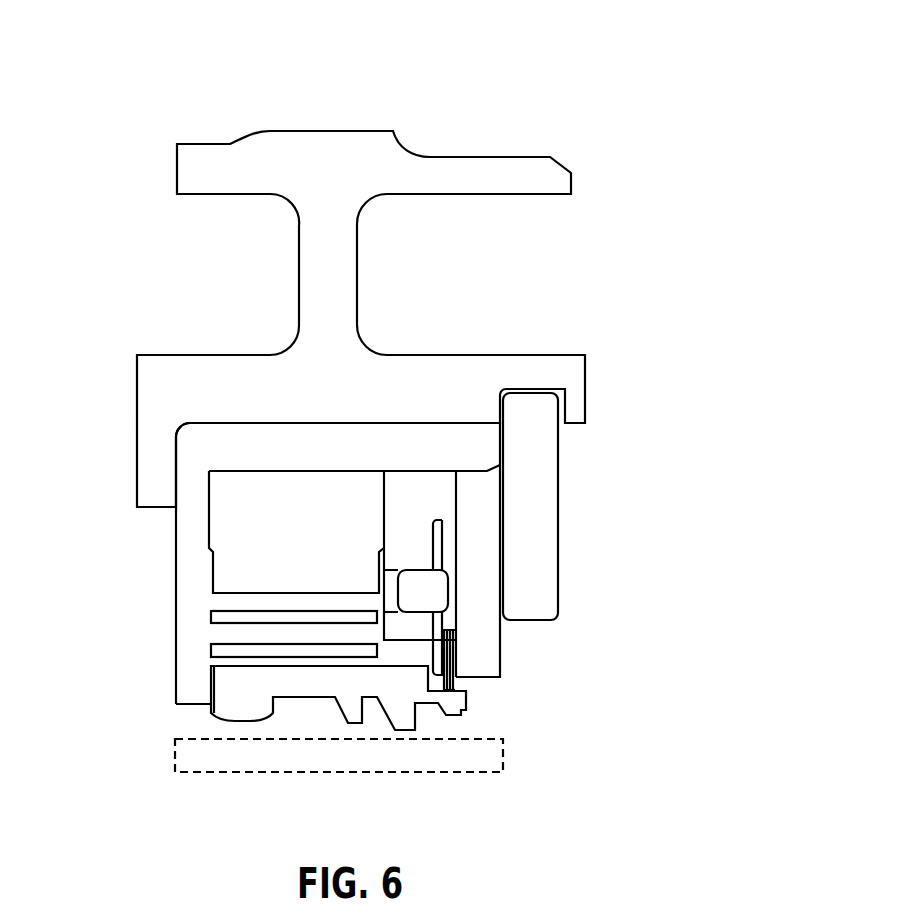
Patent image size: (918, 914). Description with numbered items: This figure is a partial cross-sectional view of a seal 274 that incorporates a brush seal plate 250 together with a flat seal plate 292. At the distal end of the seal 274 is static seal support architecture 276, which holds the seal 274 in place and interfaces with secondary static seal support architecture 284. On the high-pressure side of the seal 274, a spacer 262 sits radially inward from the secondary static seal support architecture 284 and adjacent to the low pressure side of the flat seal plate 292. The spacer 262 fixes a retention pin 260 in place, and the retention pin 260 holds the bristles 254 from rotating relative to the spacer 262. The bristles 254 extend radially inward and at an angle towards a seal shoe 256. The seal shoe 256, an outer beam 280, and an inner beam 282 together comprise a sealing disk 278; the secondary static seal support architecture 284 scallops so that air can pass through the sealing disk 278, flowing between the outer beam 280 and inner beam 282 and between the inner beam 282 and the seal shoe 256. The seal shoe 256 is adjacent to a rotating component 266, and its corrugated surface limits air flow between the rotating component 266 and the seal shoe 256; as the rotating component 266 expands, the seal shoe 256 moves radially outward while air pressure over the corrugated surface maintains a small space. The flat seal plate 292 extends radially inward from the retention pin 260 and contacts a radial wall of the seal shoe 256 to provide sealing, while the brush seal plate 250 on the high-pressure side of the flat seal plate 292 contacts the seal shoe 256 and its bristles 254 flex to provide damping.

The seal 274 is at (500, 100).
The static seal support architecture 276 is at (442, 367).
The secondary static seal support architecture 284 is at (192, 513).
The brush seal plate 250 is at (450, 555).
The spacer 262 is at (438, 507).
The sealing disk 278 is at (227, 563).
The outer beam 280 is at (227, 617).
The inner beam 282 is at (225, 649).
The retention pin 260 is at (440, 592).
The flat seal plate 292 is at (438, 633).
The bristles 254 is at (450, 683).
The seal shoe 256 is at (461, 700).
The rotating component 266 is at (490, 757).